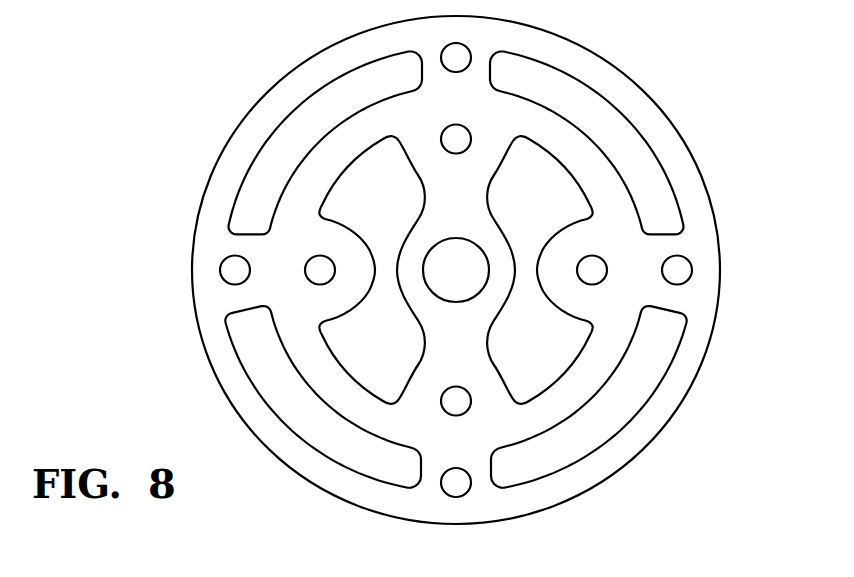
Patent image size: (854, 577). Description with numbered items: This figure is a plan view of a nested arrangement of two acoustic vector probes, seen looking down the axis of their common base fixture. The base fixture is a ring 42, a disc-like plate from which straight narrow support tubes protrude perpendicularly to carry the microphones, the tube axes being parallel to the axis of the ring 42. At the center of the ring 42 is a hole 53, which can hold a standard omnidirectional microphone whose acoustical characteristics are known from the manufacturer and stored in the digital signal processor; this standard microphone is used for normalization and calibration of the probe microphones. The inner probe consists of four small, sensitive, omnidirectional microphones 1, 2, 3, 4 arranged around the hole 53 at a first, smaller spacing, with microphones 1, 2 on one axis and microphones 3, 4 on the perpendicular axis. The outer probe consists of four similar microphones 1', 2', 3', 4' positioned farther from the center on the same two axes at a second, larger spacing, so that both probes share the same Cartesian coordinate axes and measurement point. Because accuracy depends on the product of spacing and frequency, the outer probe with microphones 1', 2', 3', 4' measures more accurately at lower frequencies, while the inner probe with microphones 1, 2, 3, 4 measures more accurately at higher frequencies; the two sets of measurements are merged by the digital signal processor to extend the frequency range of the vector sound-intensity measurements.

The ring 42 is at (247, 120).
The hole 53 is at (473, 252).
The microphone 1 is at (518, 87).
The microphone 1' is at (493, 36).
The microphone 2 is at (543, 445).
The microphone 2' is at (511, 500).
The microphone 3 is at (253, 225).
The microphone 3' is at (201, 247).
The microphone 4 is at (658, 226).
The microphone 4' is at (712, 248).